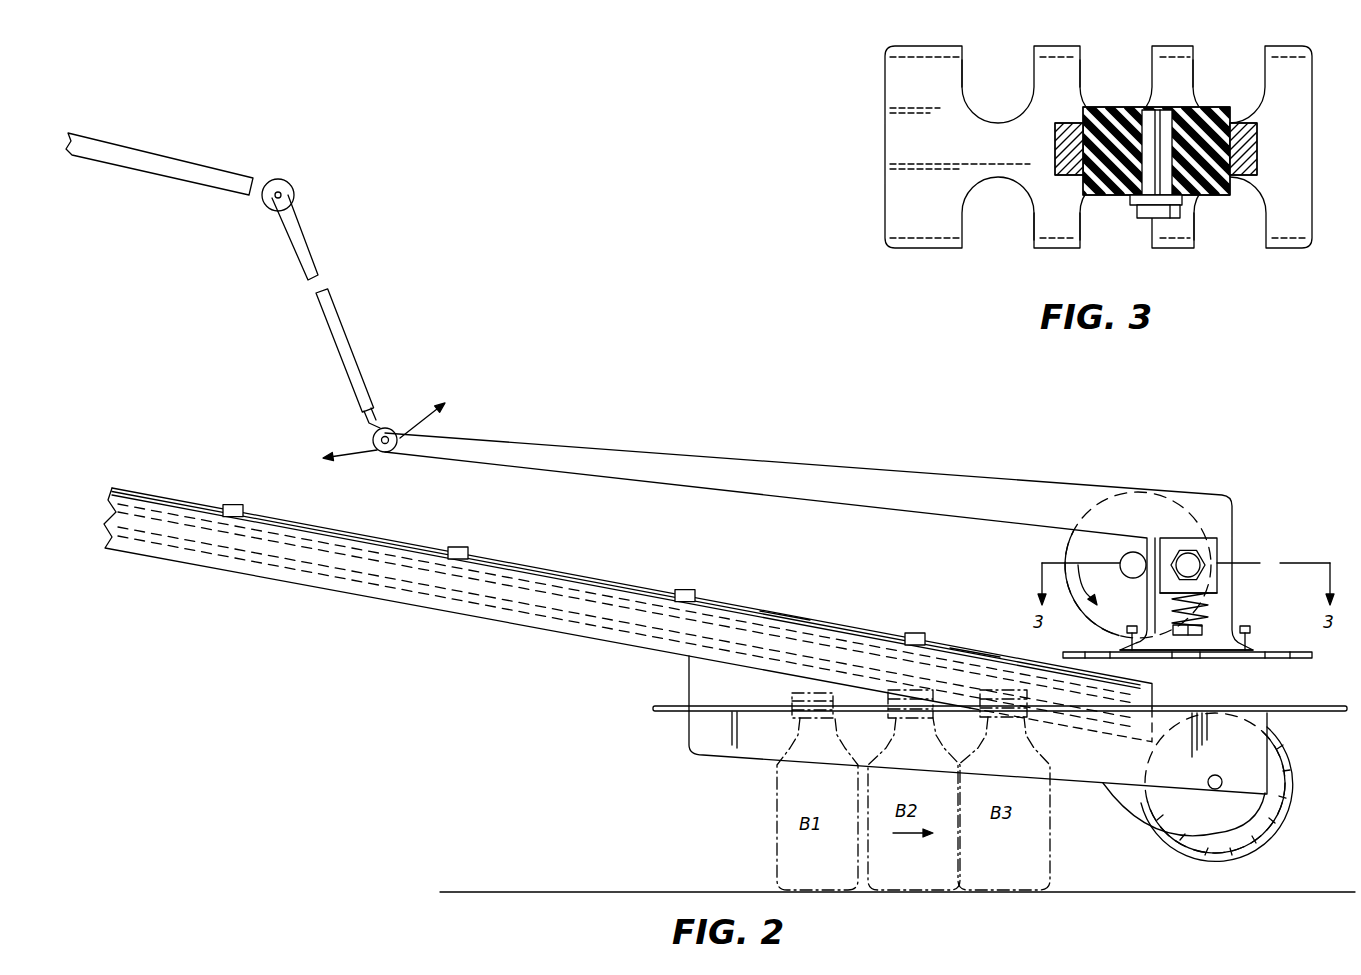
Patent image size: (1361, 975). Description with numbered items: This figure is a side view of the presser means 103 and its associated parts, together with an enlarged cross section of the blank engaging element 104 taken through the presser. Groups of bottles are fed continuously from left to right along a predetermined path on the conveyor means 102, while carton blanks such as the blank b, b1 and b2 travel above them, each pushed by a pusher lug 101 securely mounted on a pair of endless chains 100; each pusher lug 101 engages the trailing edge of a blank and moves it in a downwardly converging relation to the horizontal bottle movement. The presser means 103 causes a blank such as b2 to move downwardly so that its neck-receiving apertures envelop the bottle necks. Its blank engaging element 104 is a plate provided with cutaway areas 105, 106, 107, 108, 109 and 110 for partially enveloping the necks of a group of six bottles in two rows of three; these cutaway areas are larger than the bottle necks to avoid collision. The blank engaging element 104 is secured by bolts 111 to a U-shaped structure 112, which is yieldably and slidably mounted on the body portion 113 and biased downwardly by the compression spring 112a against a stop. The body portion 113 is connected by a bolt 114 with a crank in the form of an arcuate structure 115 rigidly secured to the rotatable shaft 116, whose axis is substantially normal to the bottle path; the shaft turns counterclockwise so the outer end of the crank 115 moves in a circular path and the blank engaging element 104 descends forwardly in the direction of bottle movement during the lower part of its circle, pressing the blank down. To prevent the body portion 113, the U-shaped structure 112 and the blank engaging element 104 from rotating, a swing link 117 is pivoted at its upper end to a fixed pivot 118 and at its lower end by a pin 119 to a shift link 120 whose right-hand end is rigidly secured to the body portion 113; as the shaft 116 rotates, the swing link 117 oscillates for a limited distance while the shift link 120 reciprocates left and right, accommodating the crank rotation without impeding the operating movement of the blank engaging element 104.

In FIG. 2, the endless chains 100 is at (1197, 693).
In FIG. 2, the pusher lugs 101 is at (240, 505).
In FIG. 2, the conveyor means 102 is at (495, 888).
In FIG. 2, the presser means 103 is at (1242, 507).
In FIG. 2, the blank engaging element 104 is at (1305, 656).
In FIG. 3, the blank engaging element 104 is at (897, 177).
In FIG. 3, the cutaway area 105 is at (1018, 185).
In FIG. 3, the cutaway area 106 is at (1082, 215).
In FIG. 3, the cutaway area 107 is at (1200, 240).
In FIG. 3, the cutaway area 108 is at (965, 87).
In FIG. 3, the cutaway area 109 is at (1085, 84).
In FIG. 3, the cutaway area 110 is at (1197, 86).
In FIG. 2, the bolts 111 is at (1128, 630).
In FIG. 2, the U-shaped structure 112 is at (1222, 596).
In FIG. 3, the U-shaped structure 112 is at (1245, 150).
In FIG. 2, the compression spring 112a is at (1212, 613).
In FIG. 2, the body portion 113 is at (1207, 550).
In FIG. 3, the body portion 113 is at (1210, 195).
In FIG. 2, the bolt 114 is at (1190, 555).
In FIG. 3, the bolt 114 is at (1153, 212).
In FIG. 2, the crank 115 is at (1072, 552).
In FIG. 2, the rotatable shaft 116 is at (1130, 552).
In FIG. 2, the swing link 117 is at (338, 307).
In FIG. 2, the fixed pivot 118 is at (292, 184).
In FIG. 2, the pin 119 is at (390, 430).
In FIG. 2, the shift link 120 is at (530, 443).
In FIG. 2, the carton blank b is at (140, 492).
In FIG. 2, the carton blank b1 is at (785, 613).
In FIG. 2, the carton blank b2 is at (970, 647).